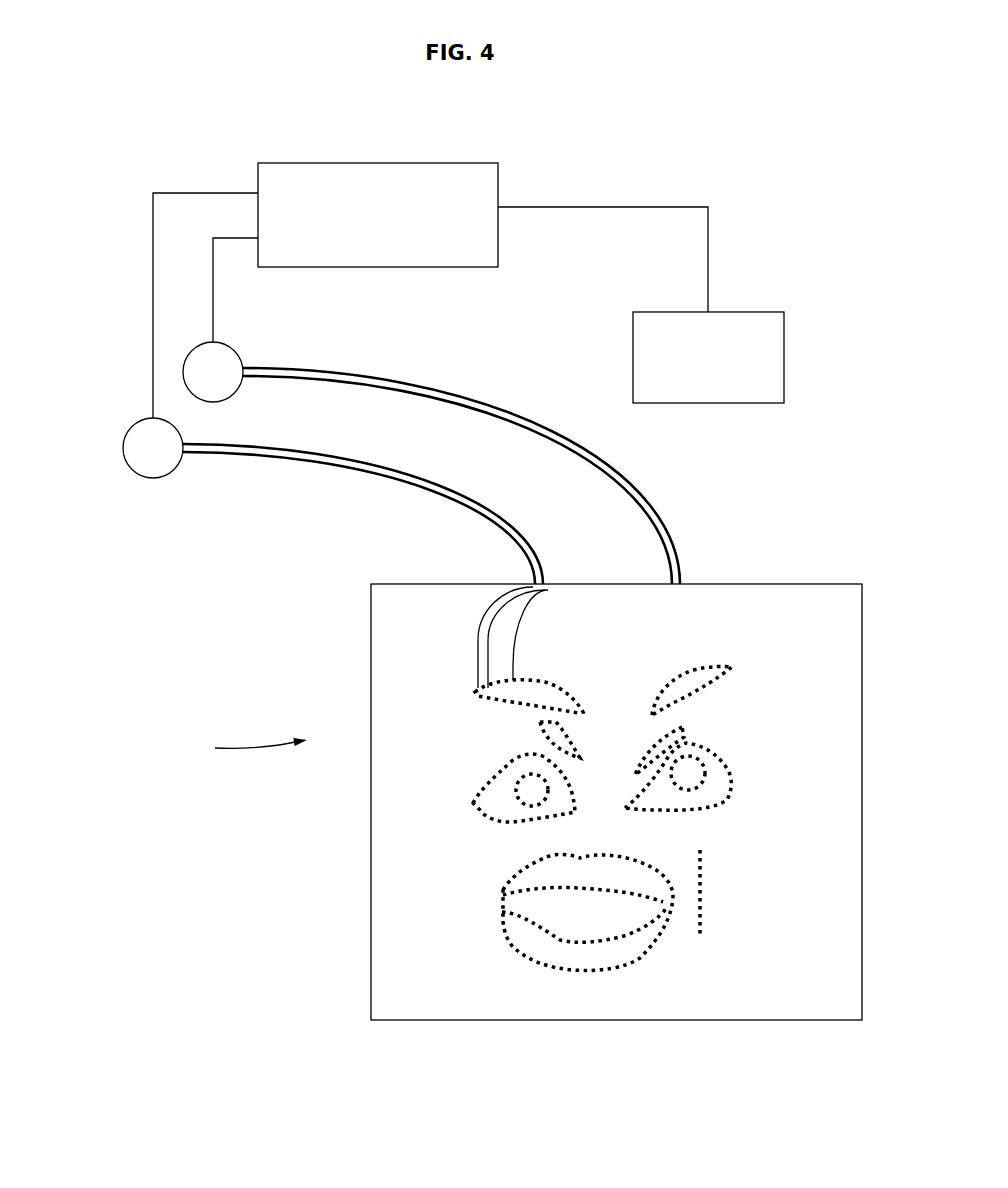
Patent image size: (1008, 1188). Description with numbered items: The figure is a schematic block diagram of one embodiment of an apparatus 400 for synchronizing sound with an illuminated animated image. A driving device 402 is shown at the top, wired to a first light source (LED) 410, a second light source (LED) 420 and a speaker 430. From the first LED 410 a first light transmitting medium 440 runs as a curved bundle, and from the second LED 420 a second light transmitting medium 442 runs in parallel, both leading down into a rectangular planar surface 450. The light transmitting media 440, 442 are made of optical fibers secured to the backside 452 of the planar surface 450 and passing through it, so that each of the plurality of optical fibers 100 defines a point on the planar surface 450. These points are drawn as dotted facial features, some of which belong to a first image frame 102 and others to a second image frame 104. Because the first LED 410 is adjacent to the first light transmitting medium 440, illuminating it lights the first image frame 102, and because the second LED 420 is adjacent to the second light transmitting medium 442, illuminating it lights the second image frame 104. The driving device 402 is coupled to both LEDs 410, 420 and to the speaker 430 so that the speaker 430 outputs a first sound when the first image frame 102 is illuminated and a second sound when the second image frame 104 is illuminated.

The apparatus 400 is at (588, 162).
The driving device 402 is at (378, 215).
The first light source (LED) 410 is at (180, 357).
The second light source (LED) 420 is at (125, 433).
The speaker 430 is at (708, 357).
The first light transmitting medium 440 is at (407, 392).
The second light transmitting medium 442 is at (420, 495).
The planar surface 450 is at (371, 652).
The backside 452 is at (235, 750).
The optical fibers 100 is at (515, 663).
The first image frame 102 is at (677, 778).
The second image frame 104 is at (548, 795).